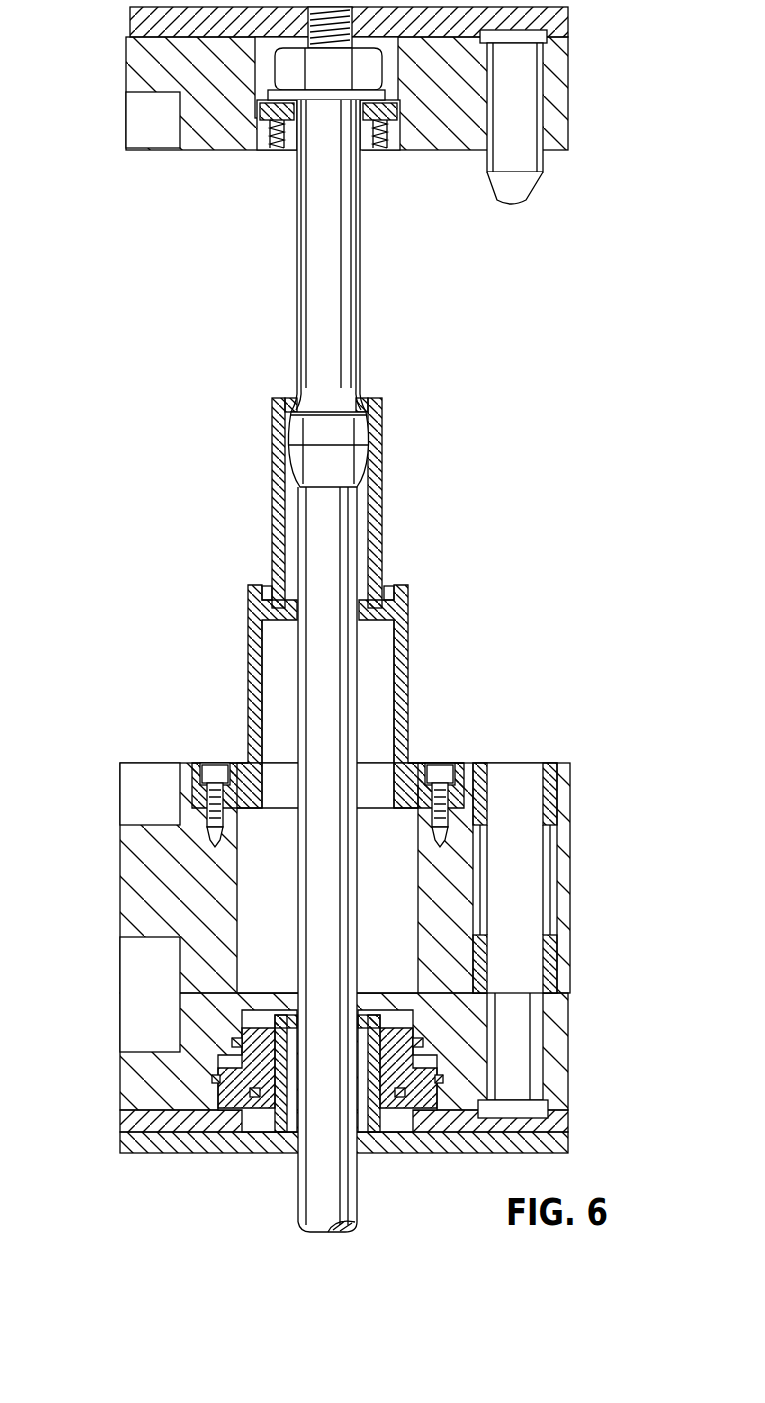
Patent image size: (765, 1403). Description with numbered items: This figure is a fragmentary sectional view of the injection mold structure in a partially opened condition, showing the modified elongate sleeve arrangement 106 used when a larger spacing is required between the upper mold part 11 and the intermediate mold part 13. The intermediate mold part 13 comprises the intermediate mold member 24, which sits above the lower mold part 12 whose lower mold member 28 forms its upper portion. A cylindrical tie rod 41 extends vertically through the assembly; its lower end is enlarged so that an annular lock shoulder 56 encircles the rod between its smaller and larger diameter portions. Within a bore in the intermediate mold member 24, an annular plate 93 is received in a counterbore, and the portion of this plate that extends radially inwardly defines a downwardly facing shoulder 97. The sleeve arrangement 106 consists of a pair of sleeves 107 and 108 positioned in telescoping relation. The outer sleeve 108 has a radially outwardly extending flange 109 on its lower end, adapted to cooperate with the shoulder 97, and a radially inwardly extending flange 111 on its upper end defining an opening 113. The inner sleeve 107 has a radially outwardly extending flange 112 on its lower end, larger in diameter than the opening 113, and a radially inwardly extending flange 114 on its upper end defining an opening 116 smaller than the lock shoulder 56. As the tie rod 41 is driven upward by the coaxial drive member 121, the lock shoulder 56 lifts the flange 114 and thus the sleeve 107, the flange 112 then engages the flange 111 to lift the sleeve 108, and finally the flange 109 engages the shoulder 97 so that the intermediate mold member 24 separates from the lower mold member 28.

The upper mold part 11 is at (558, 88).
The lower mold part 12 is at (566, 1025).
The intermediate mold part 13 is at (370, 878).
The intermediate mold member 24 is at (563, 876).
The lower mold member 28 is at (562, 1048).
The tie rod 41 is at (340, 283).
The lock shoulder 56 is at (315, 400).
The annular plate 93 is at (412, 765).
The downwardly facing shoulder 97 is at (408, 803).
The elongate sleeve arrangement 106 is at (359, 607).
The sleeve 107 is at (353, 488).
The sleeve 108 is at (328, 695).
The radially outwardly extending flange 109 is at (406, 812).
The radially inwardly extending flange 111 is at (386, 590).
The radially outwardly extending flange 112 is at (388, 612).
The opening 113 is at (277, 585).
The radially inwardly extending flange 114 is at (366, 402).
The opening 116 is at (300, 392).
The drive member 121 is at (318, 1187).